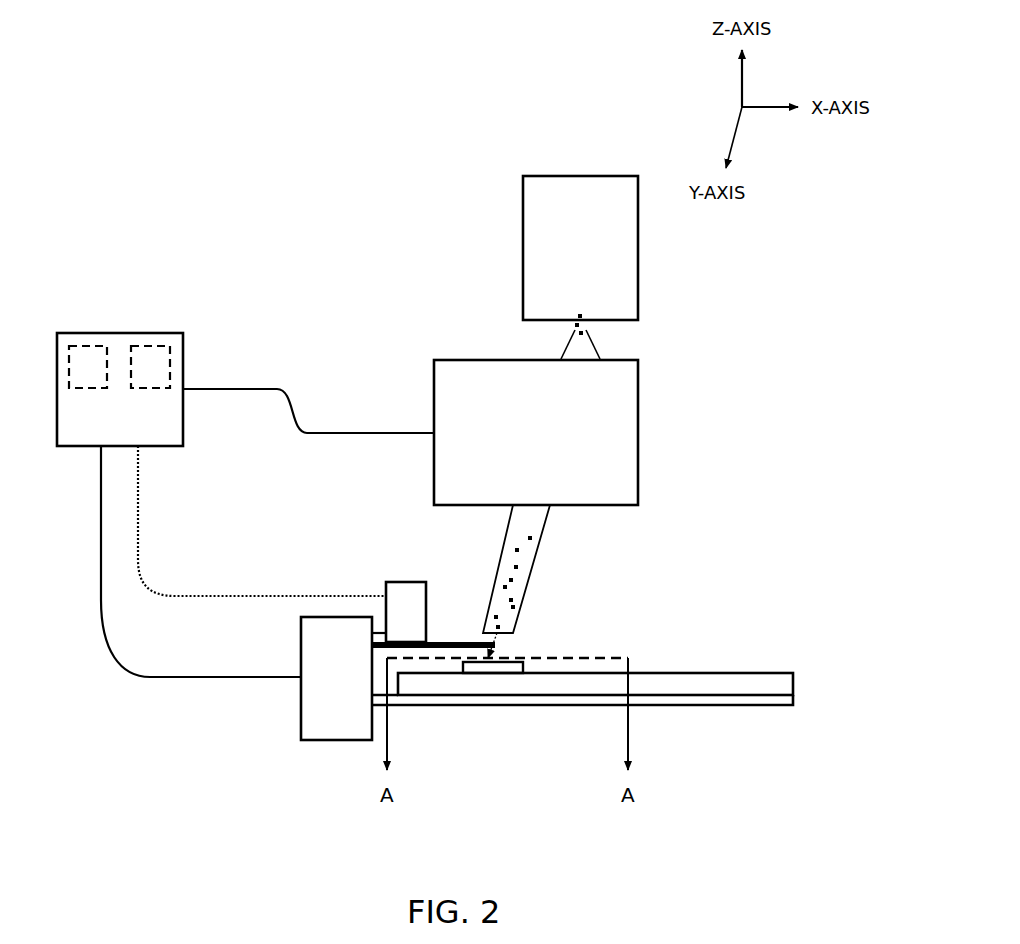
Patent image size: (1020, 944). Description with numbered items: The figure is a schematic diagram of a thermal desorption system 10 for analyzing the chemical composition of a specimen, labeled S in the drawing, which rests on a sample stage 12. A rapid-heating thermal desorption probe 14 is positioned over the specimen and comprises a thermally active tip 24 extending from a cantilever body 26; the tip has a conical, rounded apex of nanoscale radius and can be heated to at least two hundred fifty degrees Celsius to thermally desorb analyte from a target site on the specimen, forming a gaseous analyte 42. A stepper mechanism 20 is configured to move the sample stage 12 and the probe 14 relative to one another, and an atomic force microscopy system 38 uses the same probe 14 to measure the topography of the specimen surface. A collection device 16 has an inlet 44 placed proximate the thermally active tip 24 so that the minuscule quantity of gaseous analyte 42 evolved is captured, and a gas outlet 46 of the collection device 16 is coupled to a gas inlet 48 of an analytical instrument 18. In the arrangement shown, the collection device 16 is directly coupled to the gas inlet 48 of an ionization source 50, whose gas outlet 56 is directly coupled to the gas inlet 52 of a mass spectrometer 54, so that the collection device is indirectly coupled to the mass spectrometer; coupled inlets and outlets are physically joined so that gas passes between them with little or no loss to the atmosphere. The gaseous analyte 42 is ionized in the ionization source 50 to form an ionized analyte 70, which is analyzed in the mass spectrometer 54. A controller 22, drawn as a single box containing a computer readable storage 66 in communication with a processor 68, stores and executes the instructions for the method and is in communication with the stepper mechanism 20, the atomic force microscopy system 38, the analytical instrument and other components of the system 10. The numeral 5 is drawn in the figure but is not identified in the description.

The deposited bead 5 is at (523, 668).
The system 10 is at (252, 242).
The sample stage 12 is at (793, 683).
The rapid-heating thermal desorption probe 14 is at (455, 622).
The collection device 16 is at (529, 585).
The analytical instrument 18 is at (638, 420).
The stepper mechanism 20 is at (336, 678).
The controller 22 is at (245, 505).
The thermally active tip 24 is at (507, 648).
The cantilever body 26 is at (445, 648).
The atomic force microscopy system 38 is at (406, 612).
The gaseous analyte 42 is at (533, 538).
The inlet of the collection device 44 is at (481, 630).
The gas outlet of the collection device 46 is at (511, 510).
The gas inlet of the analytical instrument 48 is at (548, 505).
The ionization source 50 is at (536, 432).
The gas inlet of the mass spectrometer 52 is at (588, 318).
The mass spectrometer 54 is at (580, 248).
The gas outlet of the ionization source 56 is at (592, 340).
The computer readable storage 66 is at (88, 367).
The processor 68 is at (150, 367).
The ionized analyte 70 is at (573, 328).